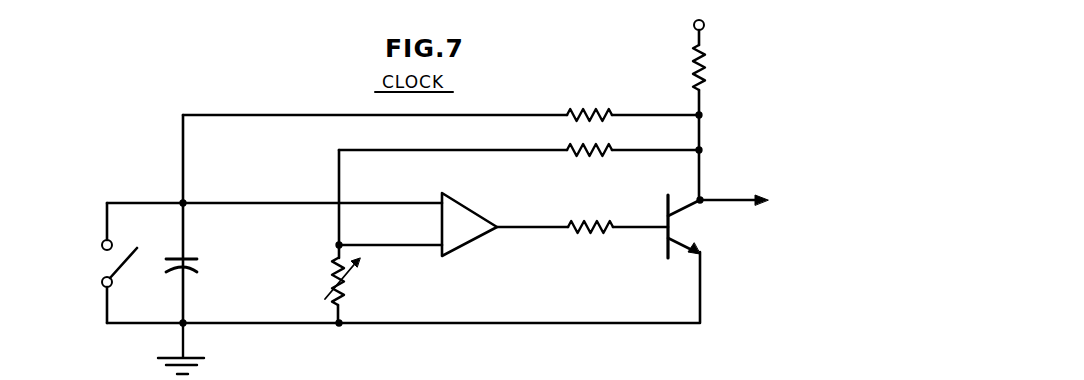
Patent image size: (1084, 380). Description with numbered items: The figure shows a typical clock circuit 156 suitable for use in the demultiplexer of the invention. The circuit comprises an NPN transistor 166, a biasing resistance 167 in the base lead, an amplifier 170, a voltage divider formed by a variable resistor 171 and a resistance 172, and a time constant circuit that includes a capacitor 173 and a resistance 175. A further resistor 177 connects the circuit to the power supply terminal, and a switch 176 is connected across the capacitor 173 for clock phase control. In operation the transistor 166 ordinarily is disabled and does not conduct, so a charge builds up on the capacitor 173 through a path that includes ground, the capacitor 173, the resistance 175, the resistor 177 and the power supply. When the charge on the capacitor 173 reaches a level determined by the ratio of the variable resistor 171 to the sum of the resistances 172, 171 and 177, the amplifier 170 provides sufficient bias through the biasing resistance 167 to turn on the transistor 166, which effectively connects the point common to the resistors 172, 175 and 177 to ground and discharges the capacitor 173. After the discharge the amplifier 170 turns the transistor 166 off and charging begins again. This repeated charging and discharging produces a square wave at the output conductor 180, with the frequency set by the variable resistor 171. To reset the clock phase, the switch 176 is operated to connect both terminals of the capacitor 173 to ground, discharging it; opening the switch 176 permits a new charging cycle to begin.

The clock circuit 156 is at (680, 334).
The NPN transistor 166 is at (670, 241).
The biasing resistance 167 is at (603, 238).
The amplifier 170 is at (457, 219).
The variable resistor 171 is at (353, 287).
The resistance 172 is at (603, 155).
The capacitor 173 is at (188, 270).
The resistance 175 is at (597, 108).
The switch 176 is at (120, 262).
The resistor 177 is at (707, 67).
The output conductor 180 is at (728, 198).